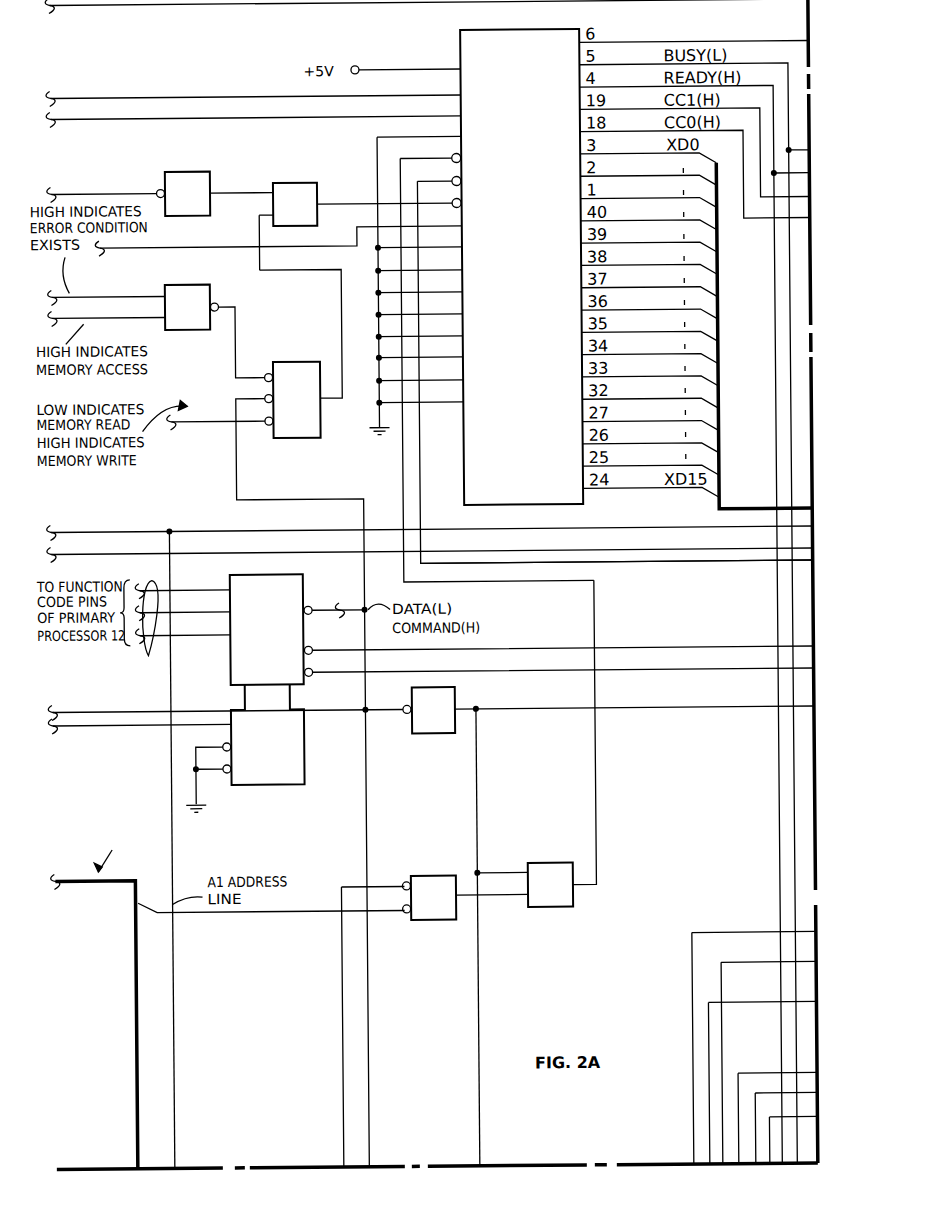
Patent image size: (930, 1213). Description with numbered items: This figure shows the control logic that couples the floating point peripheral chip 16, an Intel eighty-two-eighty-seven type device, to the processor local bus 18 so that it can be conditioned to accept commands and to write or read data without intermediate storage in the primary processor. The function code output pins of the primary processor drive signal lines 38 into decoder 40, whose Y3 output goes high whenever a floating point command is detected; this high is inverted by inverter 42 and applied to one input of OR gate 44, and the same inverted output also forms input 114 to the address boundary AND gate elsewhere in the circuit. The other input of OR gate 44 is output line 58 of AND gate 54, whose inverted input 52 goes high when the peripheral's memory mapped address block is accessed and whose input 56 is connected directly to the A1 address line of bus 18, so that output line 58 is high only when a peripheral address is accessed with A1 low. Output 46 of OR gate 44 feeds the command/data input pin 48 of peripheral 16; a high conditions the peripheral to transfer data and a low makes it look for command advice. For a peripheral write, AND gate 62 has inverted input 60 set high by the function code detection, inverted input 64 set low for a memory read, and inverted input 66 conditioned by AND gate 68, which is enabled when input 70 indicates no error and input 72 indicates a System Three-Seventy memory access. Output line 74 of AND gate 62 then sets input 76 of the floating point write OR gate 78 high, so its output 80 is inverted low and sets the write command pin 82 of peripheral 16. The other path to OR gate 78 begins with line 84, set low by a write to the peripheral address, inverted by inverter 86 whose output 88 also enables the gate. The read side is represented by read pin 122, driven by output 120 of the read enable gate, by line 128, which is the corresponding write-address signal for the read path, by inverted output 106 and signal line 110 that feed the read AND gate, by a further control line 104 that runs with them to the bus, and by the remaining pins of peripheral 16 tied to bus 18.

The floating point peripheral chip 16 is at (463, 456).
The local processor bus 18 is at (90, 991).
The signal lines 38 is at (175, 629).
The decoder 40 is at (230, 658).
The inverter 42 is at (459, 697).
The OR gate 44 is at (553, 863).
The output of OR gate 46 is at (594, 765).
The command/data input pin 48 is at (455, 157).
The inverted input of AND gate 52 is at (403, 880).
The AND gate 54 is at (439, 875).
The input of AND gate 56 is at (403, 914).
The output line 58 is at (511, 898).
The inverted input of AND gate 60 is at (266, 395).
The AND gate 62 is at (287, 363).
The inverted input of AND gate 64 is at (265, 425).
The inverted input of AND gate 66 is at (266, 372).
The AND gate 68 is at (175, 287).
The input of AND gate 70 is at (108, 293).
The input of AND gate 72 is at (133, 312).
The output line 74 is at (344, 364).
The input of OR gate 76 is at (260, 231).
The floating point write OR gate 78 is at (283, 186).
The output of OR gate 80 is at (362, 211).
The write command pin 82 is at (465, 207).
The line 84 is at (90, 198).
The inverter 86 is at (175, 174).
The output of inverter 88 is at (248, 197).
The control line 104 is at (764, 1077).
The inverted output of AND gate 106 is at (748, 1112).
The signal line 110 is at (762, 1146).
The input to AND gate 114 is at (479, 1000).
The output of read enable gate 120 is at (704, 565).
The read pin 122 is at (465, 180).
The line 128 is at (760, 1006).